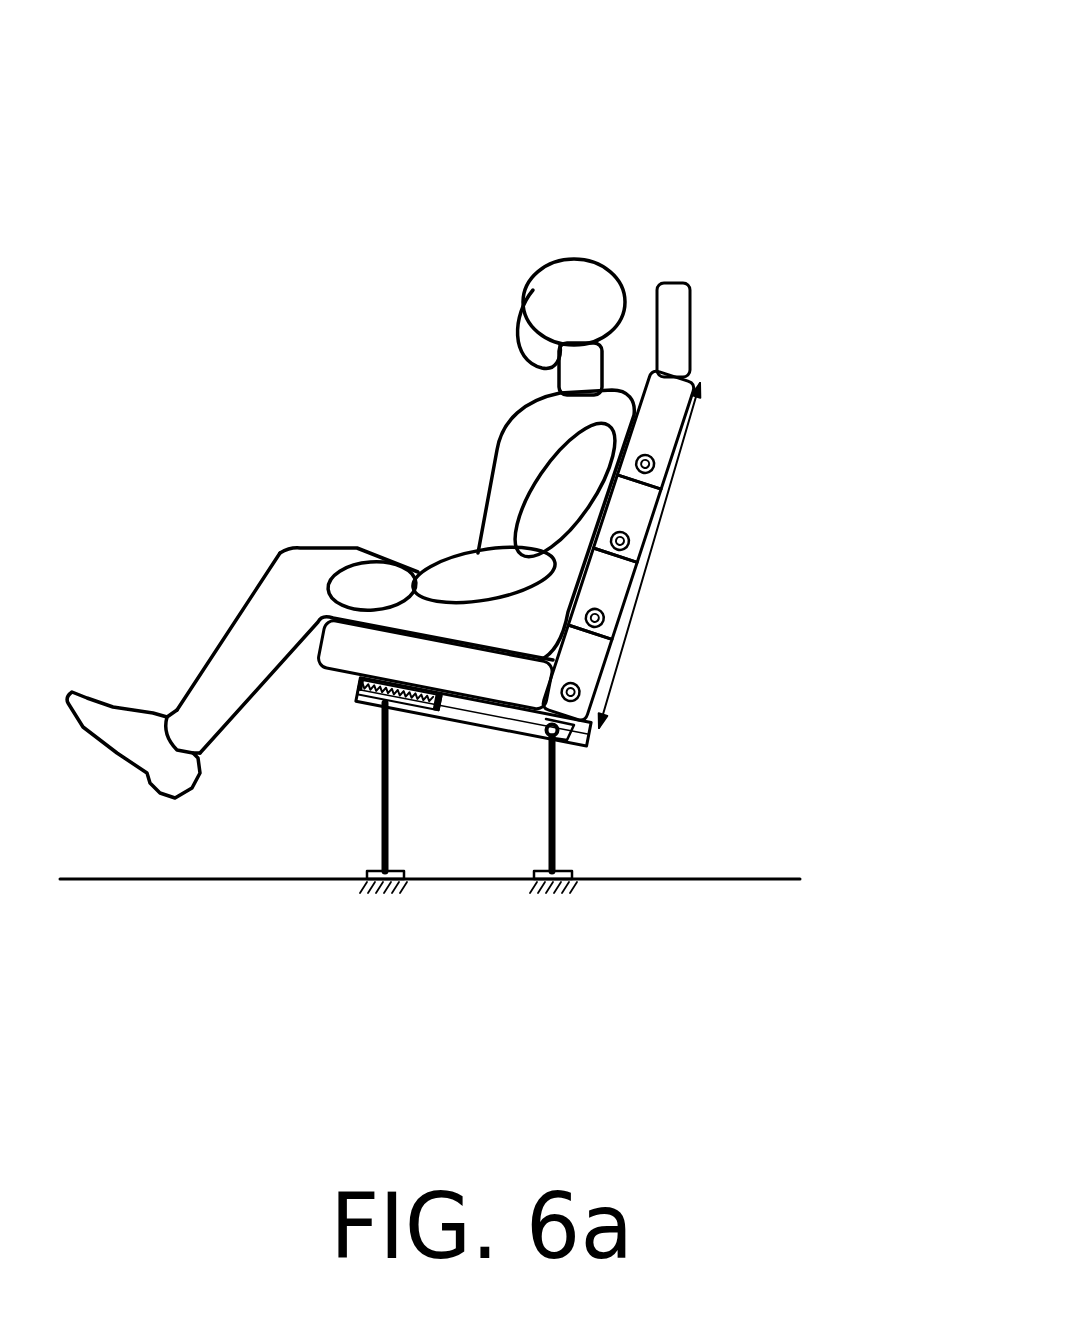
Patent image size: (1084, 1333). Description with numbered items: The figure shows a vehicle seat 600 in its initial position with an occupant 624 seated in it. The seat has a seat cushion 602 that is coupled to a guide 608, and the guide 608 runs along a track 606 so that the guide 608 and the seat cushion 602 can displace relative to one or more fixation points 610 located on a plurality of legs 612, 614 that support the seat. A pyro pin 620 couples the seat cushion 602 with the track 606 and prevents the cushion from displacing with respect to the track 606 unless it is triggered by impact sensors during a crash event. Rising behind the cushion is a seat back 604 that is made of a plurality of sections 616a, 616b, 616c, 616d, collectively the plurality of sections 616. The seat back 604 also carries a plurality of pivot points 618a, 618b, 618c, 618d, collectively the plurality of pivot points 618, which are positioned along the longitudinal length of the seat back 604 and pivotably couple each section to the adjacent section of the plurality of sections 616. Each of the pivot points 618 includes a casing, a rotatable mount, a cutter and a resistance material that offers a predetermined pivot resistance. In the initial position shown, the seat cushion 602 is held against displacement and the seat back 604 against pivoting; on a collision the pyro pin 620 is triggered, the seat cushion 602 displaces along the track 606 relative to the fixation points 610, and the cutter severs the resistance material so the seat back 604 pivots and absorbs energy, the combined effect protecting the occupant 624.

The vehicle seat 600 is at (563, 78).
The seat cushion 602 is at (326, 650).
The seat back 604 is at (703, 370).
The track 606 is at (462, 722).
The guide 608 is at (478, 712).
The fixation points 610 is at (382, 708).
The leg 612 is at (378, 876).
The leg 614 is at (570, 880).
The plurality of sections 616 is at (742, 604).
The section 616a is at (576, 673).
The section 616b is at (602, 593).
The section 616c is at (627, 518).
The section 616d is at (656, 429).
The plurality of pivot points 618 is at (250, 304).
The pivot point 618a is at (570, 692).
The pivot point 618b is at (594, 618).
The pivot point 618c is at (620, 541).
The pivot point 618d is at (645, 464).
The pyro pin 620 is at (556, 734).
The occupant 624 is at (247, 603).